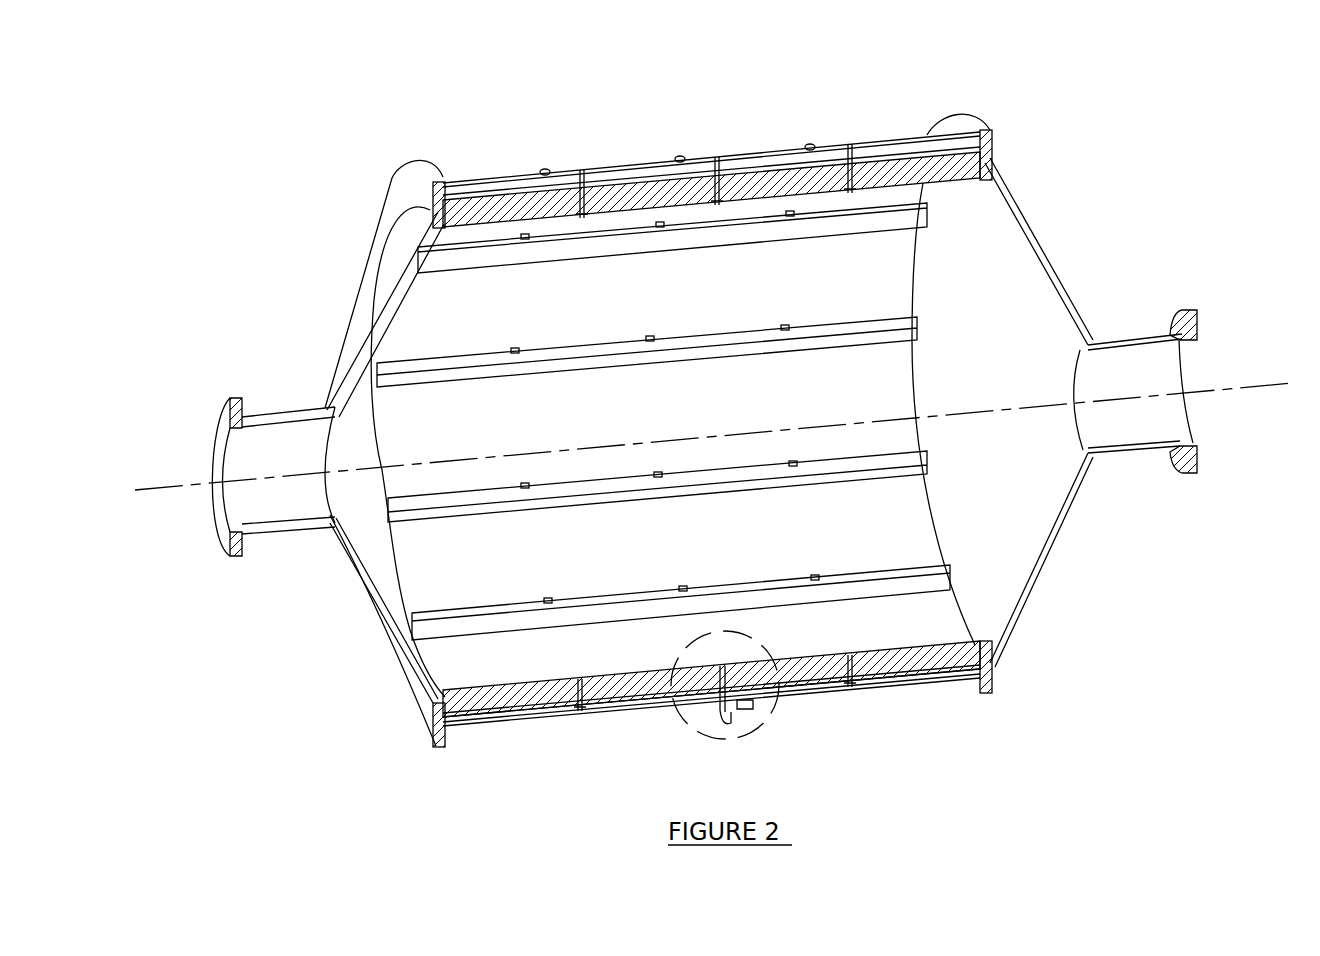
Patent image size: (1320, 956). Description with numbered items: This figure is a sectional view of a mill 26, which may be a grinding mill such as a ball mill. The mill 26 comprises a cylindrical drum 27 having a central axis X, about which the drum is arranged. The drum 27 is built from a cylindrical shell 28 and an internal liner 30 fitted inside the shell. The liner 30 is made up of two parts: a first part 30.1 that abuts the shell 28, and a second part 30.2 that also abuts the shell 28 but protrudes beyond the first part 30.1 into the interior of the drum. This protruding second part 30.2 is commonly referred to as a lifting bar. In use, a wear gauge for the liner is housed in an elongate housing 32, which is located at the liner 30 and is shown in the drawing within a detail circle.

The mill 26 is at (1112, 90).
The drum 27 is at (872, 95).
The shell 28 is at (634, 173).
The liner 30 is at (990, 638).
The first part 30.1 is at (947, 622).
The second part 30.2 is at (945, 665).
The housing 32 is at (729, 679).
The central axis X is at (180, 483).